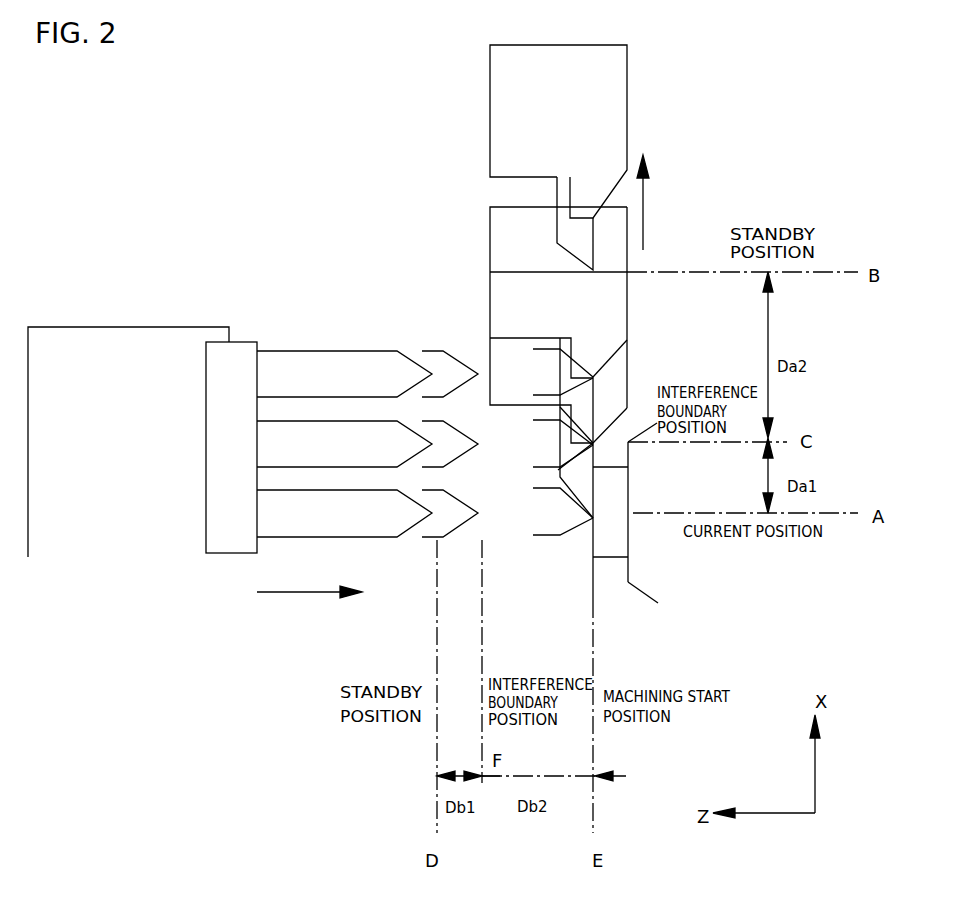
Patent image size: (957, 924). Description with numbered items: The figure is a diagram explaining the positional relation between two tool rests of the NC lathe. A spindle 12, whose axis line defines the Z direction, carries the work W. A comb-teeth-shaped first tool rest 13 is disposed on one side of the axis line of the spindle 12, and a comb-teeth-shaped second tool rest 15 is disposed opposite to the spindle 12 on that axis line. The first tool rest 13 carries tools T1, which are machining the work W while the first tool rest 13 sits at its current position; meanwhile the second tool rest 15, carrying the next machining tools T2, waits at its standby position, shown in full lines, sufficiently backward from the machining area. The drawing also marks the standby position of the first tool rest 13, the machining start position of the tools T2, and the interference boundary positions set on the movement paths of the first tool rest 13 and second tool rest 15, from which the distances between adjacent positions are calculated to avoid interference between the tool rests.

The second tool rest 15 is at (95, 318).
The next machining tools T2 is at (287, 367).
The first tool rest 13 is at (472, 279).
The tools T1 is at (590, 482).
The work W is at (605, 535).
The spindle 12 is at (655, 593).